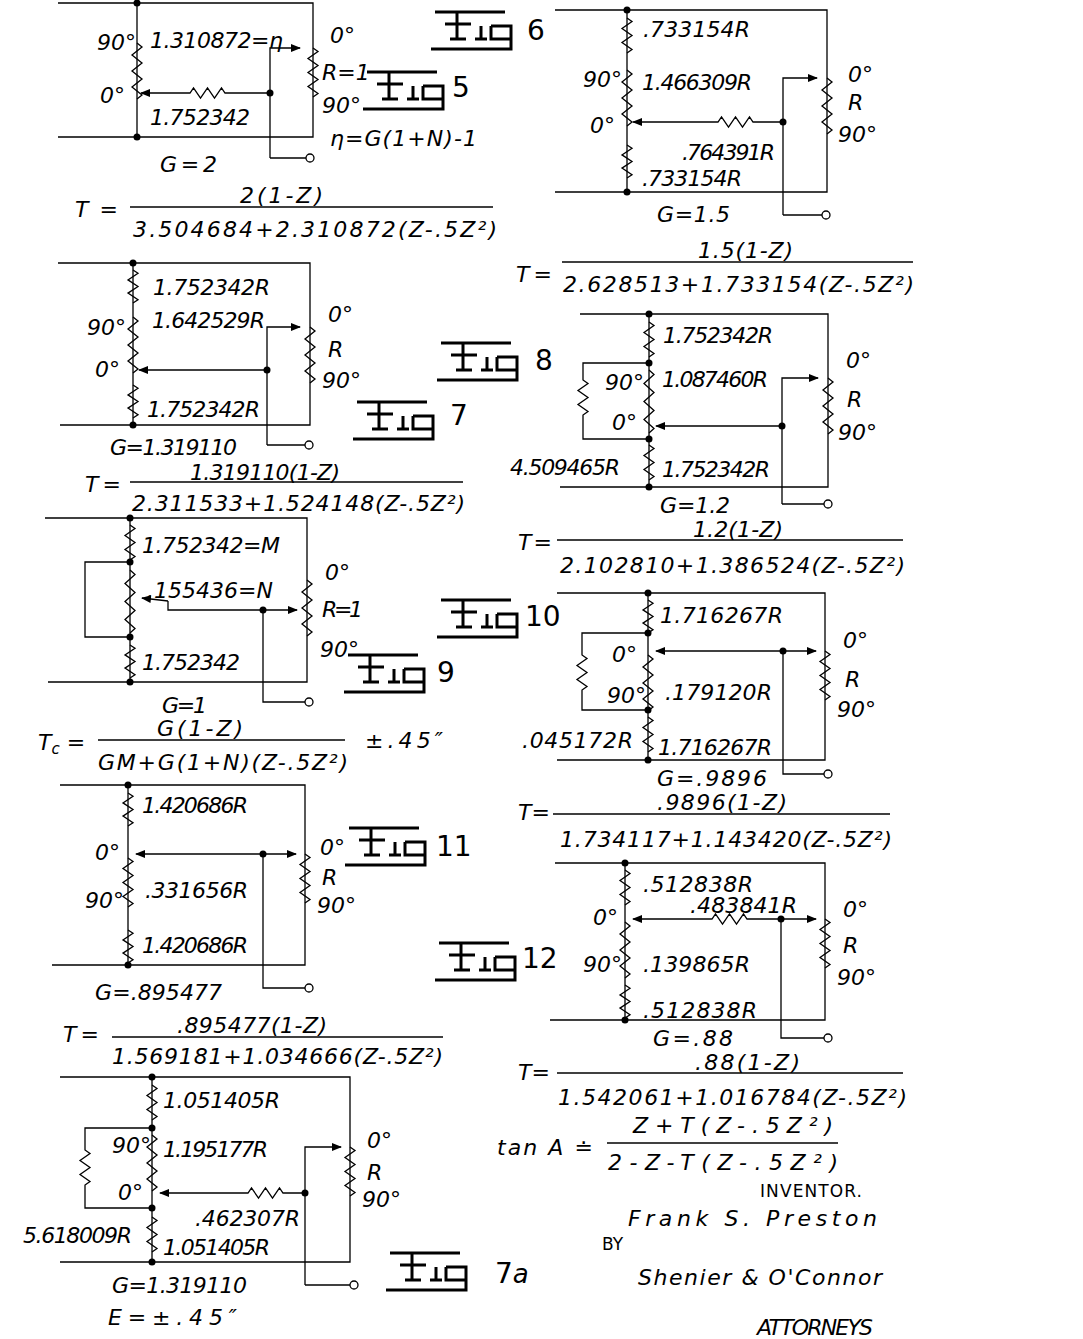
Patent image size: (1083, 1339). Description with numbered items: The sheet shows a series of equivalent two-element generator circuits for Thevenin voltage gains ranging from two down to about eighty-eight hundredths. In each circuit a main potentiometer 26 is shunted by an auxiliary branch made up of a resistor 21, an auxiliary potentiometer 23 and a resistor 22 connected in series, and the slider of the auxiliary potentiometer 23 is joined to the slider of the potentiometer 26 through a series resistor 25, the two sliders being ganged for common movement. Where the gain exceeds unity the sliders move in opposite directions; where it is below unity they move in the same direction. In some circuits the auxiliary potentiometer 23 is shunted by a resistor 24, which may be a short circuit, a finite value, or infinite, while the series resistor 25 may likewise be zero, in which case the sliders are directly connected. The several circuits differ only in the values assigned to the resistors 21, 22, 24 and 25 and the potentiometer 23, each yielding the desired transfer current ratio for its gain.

In FIG. 6, the resistor 21 is at (617, 38).
In FIG. 7, the resistor 21 is at (123, 293).
In FIG. 8, the resistor 21 is at (649, 337).
In FIG. 9, the resistor 21 is at (120, 542).
In FIG. 10, the resistor 21 is at (650, 612).
In FIG. 11, the resistor 21 is at (123, 813).
In FIG. 12, the resistor 21 is at (625, 881).
In FIG. 7a, the resistor 21 is at (149, 1101).
In FIG. 6, the resistor 22 is at (617, 161).
In FIG. 7, the resistor 22 is at (123, 403).
In FIG. 8, the resistor 22 is at (660, 466).
In FIG. 9, the resistor 22 is at (125, 658).
In FIG. 10, the resistor 22 is at (665, 743).
In FIG. 11, the resistor 22 is at (123, 940).
In FIG. 12, the resistor 22 is at (625, 996).
In FIG. 7a, the resistor 22 is at (153, 1236).
In FIG. 5, the auxiliary potentiometer 23 is at (143, 74).
In FIG. 6, the auxiliary potentiometer 23 is at (637, 111).
In FIG. 7, the auxiliary potentiometer 23 is at (138, 355).
In FIG. 8, the auxiliary potentiometer 23 is at (648, 408).
In FIG. 9, the auxiliary potentiometer 23 is at (135, 634).
In FIG. 10, the auxiliary potentiometer 23 is at (652, 672).
In FIG. 11, the auxiliary potentiometer 23 is at (137, 875).
In FIG. 12, the auxiliary potentiometer 23 is at (633, 941).
In FIG. 7a, the auxiliary potentiometer 23 is at (155, 1181).
In FIG. 8, the shunting resistor 24 is at (582, 402).
In FIG. 9, the shunting resistor 24 is at (77, 613).
In FIG. 10, the shunting resistor 24 is at (583, 672).
In FIG. 7a, the shunting resistor 24 is at (82, 1166).
In FIG. 5, the series resistor 25 is at (206, 84).
In FIG. 6, the series resistor 25 is at (738, 120).
In FIG. 7, the series resistor 25 is at (214, 369).
In FIG. 11, the series resistor 25 is at (212, 858).
In FIG. 12, the series resistor 25 is at (729, 934).
In FIG. 7a, the series resistor 25 is at (261, 1191).
In FIG. 5, the potentiometer 26 is at (288, 104).
In FIG. 6, the potentiometer 26 is at (818, 118).
In FIG. 7, the potentiometer 26 is at (302, 364).
In FIG. 8, the potentiometer 26 is at (820, 411).
In FIG. 9, the potentiometer 26 is at (298, 618).
In FIG. 10, the potentiometer 26 is at (820, 690).
In FIG. 11, the potentiometer 26 is at (300, 889).
In FIG. 12, the potentiometer 26 is at (818, 959).
In FIG. 7a, the potentiometer 26 is at (345, 1188).